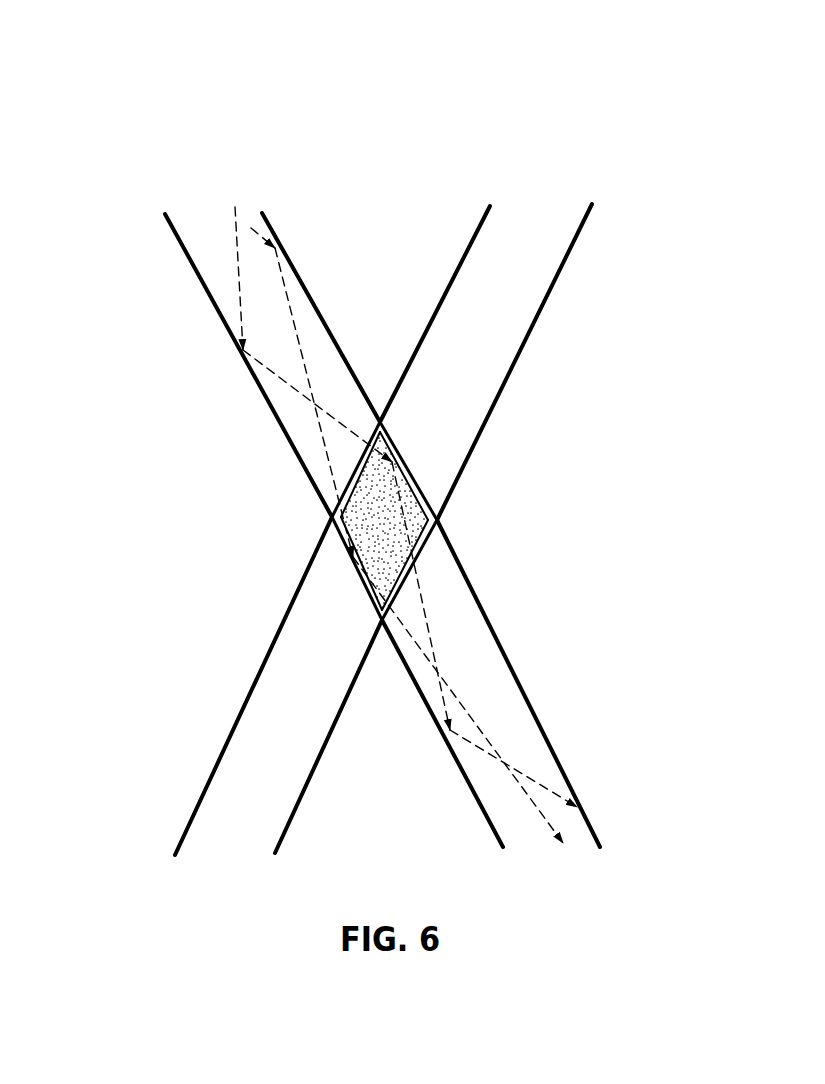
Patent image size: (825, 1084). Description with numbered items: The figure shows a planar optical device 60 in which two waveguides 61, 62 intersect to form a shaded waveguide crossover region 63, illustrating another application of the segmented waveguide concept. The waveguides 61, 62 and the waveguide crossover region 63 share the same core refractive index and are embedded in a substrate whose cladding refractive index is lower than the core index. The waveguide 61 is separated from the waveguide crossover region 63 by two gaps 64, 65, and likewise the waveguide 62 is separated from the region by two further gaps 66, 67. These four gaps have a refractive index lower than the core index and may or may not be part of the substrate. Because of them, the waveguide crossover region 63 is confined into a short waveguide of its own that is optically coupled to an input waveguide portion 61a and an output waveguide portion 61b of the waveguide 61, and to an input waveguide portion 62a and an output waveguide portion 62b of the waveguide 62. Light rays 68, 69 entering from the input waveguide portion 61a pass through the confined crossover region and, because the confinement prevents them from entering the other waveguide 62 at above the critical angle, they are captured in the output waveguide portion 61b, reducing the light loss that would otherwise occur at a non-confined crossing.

The planar optical device 60 is at (652, 160).
The waveguide 61 is at (193, 225).
The input waveguide portion 61a is at (297, 273).
The output waveguide portion 61b is at (543, 733).
The waveguide 62 is at (522, 227).
The input waveguide portion 62a is at (562, 273).
The output waveguide portion 62b is at (315, 772).
The waveguide crossover region 63 is at (367, 543).
The gap 64 is at (333, 520).
The gap 65 is at (440, 522).
The gap 66 is at (380, 425).
The gap 67 is at (381, 628).
The light ray 68 is at (203, 283).
The light ray 69 is at (293, 300).